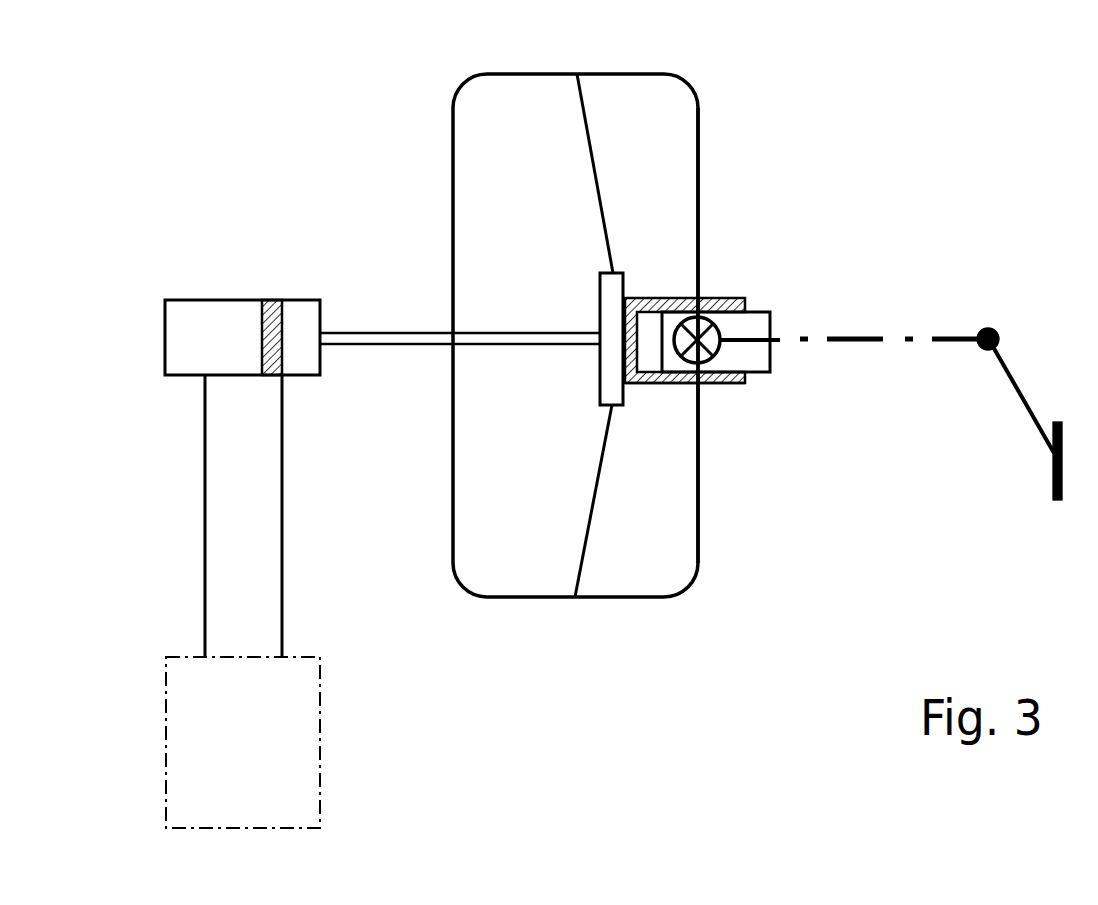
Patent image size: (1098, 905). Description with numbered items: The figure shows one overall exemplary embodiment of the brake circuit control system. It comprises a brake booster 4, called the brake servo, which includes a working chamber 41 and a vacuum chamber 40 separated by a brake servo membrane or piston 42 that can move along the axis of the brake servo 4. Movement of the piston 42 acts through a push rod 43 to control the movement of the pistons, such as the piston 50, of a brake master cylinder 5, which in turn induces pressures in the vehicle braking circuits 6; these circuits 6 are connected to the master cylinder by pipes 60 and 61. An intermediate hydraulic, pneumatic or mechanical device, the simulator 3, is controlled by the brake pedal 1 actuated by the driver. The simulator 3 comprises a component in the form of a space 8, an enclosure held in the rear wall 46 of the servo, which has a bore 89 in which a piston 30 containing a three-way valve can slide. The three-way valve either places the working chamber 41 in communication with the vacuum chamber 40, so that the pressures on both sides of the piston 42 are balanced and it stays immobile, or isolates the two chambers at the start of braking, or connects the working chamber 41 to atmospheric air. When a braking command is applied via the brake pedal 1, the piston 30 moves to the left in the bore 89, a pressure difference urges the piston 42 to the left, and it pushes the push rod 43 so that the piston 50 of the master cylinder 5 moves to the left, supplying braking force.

The brake pedal 1 is at (1003, 360).
The simulator 3 is at (722, 290).
The brake booster 4 is at (678, 116).
The brake master cylinder 5 is at (224, 297).
The braking circuits 6 is at (320, 742).
The space 8 is at (722, 383).
The piston 30 is at (747, 325).
The vacuum chamber 40 is at (505, 120).
The working chamber 41 is at (628, 145).
The brake servo piston 42 is at (608, 75).
The push rod 43 is at (423, 333).
The rear wall 46 is at (698, 188).
The master cylinder piston 50 is at (272, 300).
The pipe 60 is at (205, 510).
The pipe 61 is at (282, 505).
The bore 89 is at (645, 327).